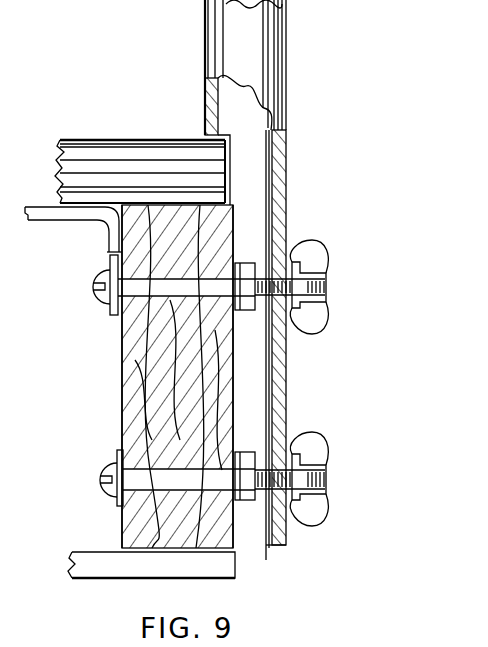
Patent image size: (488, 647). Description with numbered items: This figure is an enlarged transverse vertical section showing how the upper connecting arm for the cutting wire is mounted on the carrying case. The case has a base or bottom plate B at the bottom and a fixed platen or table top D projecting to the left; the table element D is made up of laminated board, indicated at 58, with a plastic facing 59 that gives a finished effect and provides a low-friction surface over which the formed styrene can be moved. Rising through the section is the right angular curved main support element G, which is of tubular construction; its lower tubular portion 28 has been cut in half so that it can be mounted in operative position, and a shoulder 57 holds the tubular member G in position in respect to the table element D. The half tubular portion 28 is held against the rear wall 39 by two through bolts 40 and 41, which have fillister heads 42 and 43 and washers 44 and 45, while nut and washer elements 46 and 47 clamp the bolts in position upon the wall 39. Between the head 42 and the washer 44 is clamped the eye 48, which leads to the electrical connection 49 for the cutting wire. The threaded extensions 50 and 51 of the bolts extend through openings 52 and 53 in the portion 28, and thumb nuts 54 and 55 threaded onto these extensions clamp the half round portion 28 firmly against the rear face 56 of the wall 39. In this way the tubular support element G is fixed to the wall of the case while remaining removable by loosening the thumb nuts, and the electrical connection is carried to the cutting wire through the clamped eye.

The main support element G is at (224, 30).
The fixed platen or table top D is at (104, 158).
The base or bottom plate B is at (110, 574).
The lower tubular portion 28 is at (284, 378).
The rear wall 39 is at (152, 376).
The through bolt 40 is at (121, 368).
The through bolt 41 is at (121, 508).
The fillister head 42 is at (97, 280).
The fillister head 43 is at (100, 470).
The washer 44 is at (180, 287).
The washer 45 is at (120, 452).
The nut and washer element 46 is at (238, 266).
The nut and washer element 47 is at (238, 452).
The eye 48 is at (112, 310).
The electrical connection 49 is at (100, 222).
The threaded extension 50 is at (322, 280).
The threaded extension 51 is at (326, 483).
The opening 52 is at (288, 256).
The opening 53 is at (264, 549).
The thumb nut 54 is at (317, 243).
The thumb nut 55 is at (311, 437).
The rear face 56 is at (234, 401).
The shoulder 57 is at (222, 135).
The laminated board 58 is at (56, 188).
The plastic facing 59 is at (62, 147).